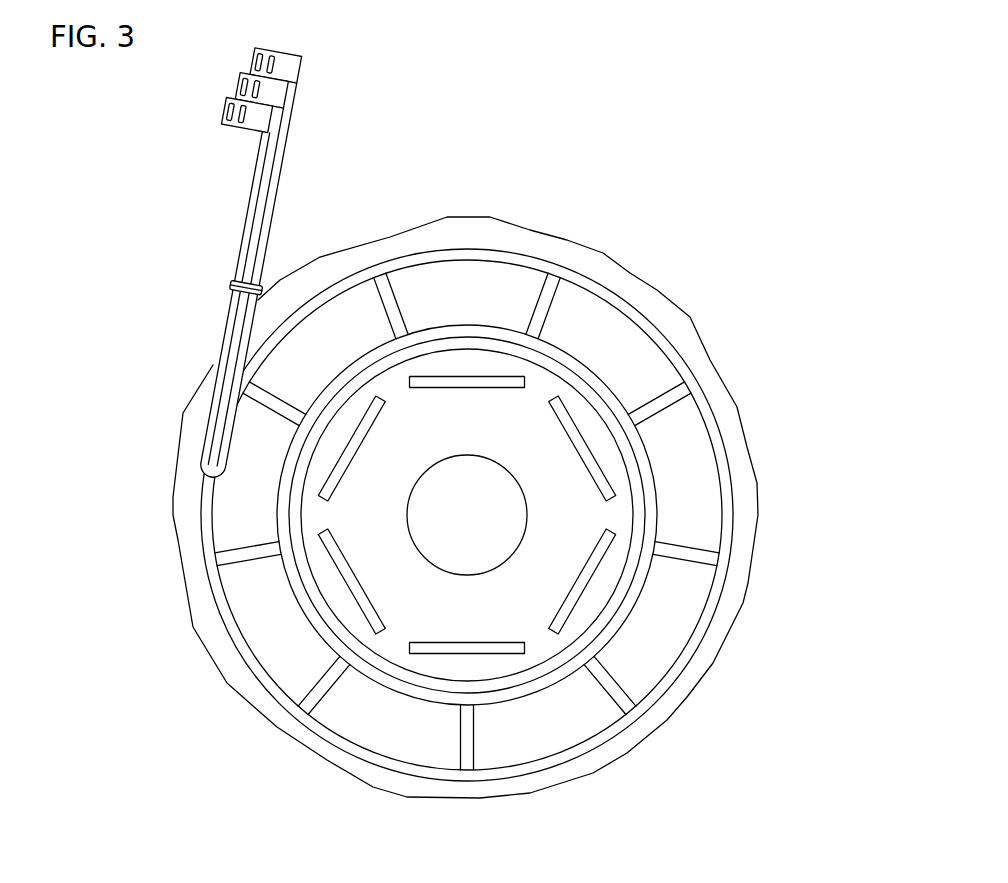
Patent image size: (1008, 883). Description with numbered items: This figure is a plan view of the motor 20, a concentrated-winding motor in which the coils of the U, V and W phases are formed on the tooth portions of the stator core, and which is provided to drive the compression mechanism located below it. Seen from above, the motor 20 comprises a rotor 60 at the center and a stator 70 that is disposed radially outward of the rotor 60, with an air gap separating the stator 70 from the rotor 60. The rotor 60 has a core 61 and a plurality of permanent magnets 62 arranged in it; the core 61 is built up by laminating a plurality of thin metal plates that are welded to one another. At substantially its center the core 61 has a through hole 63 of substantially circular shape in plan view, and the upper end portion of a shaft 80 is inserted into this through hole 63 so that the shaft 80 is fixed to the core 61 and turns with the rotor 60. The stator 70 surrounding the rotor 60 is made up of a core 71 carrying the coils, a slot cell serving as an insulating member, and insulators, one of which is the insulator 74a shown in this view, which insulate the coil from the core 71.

The motor 20 is at (483, 458).
The rotor 60 is at (437, 517).
The core 61 is at (387, 643).
The permanent magnets 62 is at (466, 380).
The through hole 63 is at (487, 567).
The stator 70 is at (717, 400).
The core 71 is at (743, 457).
The insulator 74a is at (727, 502).
The shaft 80 is at (615, 653).